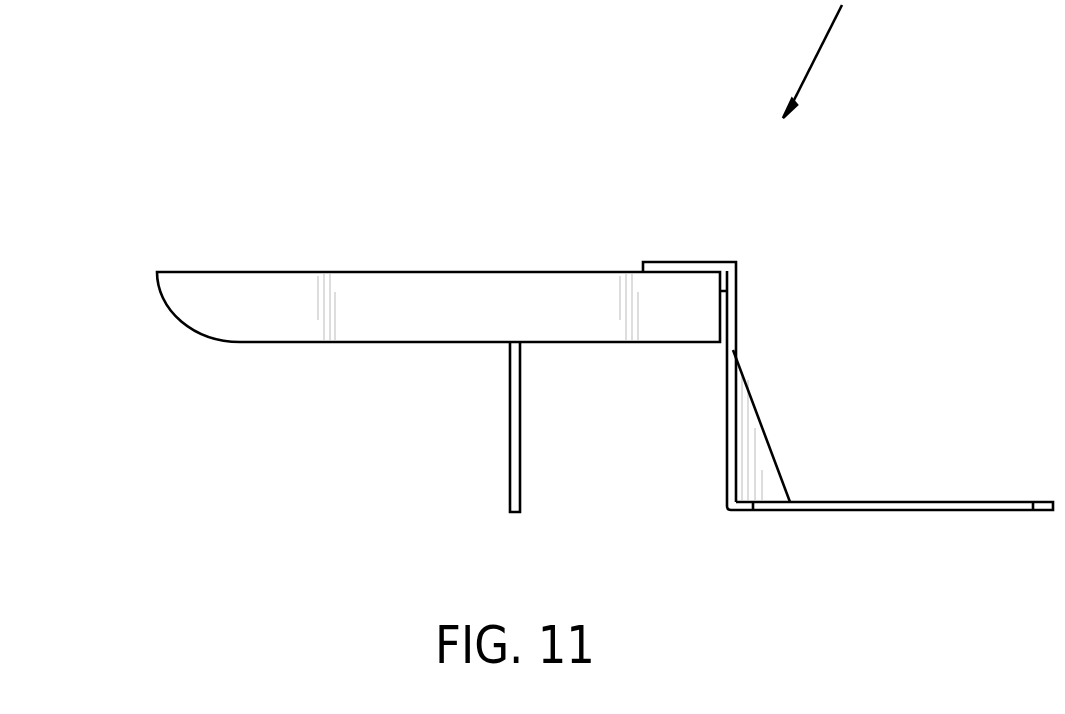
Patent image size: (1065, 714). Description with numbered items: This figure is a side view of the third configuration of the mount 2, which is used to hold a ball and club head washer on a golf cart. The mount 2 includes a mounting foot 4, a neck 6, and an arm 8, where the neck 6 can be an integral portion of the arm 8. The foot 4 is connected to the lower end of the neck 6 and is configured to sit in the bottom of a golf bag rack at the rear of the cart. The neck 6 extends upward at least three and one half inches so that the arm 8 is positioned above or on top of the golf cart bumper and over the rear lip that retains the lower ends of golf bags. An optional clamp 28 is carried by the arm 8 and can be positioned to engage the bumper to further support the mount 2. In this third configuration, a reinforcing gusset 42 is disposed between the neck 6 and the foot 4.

The mount 2 is at (827, 60).
The mounting foot 4 is at (958, 512).
The neck 6 is at (733, 348).
The arm 8 is at (388, 285).
The clamp 28 is at (515, 457).
The reinforcing gusset 42 is at (762, 435).